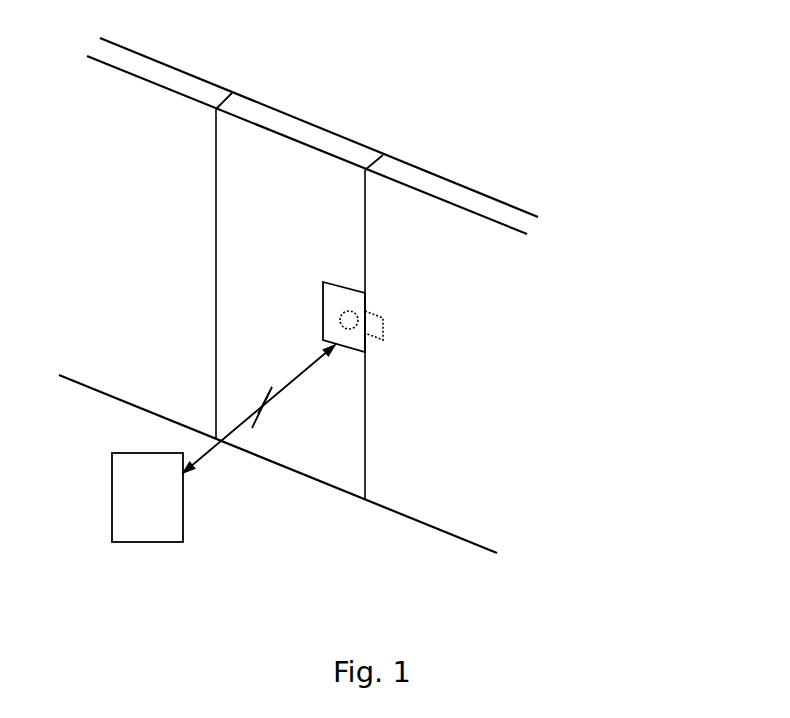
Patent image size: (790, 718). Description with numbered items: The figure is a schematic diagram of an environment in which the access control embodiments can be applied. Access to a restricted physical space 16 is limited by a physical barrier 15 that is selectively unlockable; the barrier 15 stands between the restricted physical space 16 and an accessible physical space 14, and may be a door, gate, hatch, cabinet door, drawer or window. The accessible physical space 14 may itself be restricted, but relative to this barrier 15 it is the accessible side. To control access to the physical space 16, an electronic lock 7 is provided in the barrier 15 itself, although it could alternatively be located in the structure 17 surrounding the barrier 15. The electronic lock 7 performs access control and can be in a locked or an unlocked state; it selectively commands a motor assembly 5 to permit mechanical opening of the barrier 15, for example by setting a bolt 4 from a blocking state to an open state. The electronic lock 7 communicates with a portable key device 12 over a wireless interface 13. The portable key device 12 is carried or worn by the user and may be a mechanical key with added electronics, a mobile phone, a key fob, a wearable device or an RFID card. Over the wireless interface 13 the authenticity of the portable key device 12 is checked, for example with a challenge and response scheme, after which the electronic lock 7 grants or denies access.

The bolt 4 is at (383, 318).
The motor assembly 5 is at (353, 328).
The electronic lock 7 is at (333, 282).
The portable key device 12 is at (137, 542).
The wireless interface 13 is at (207, 455).
The accessible physical space 14 is at (60, 193).
The physical barrier 15 is at (268, 148).
The physical space 16 is at (683, 58).
The structure 17 is at (520, 378).